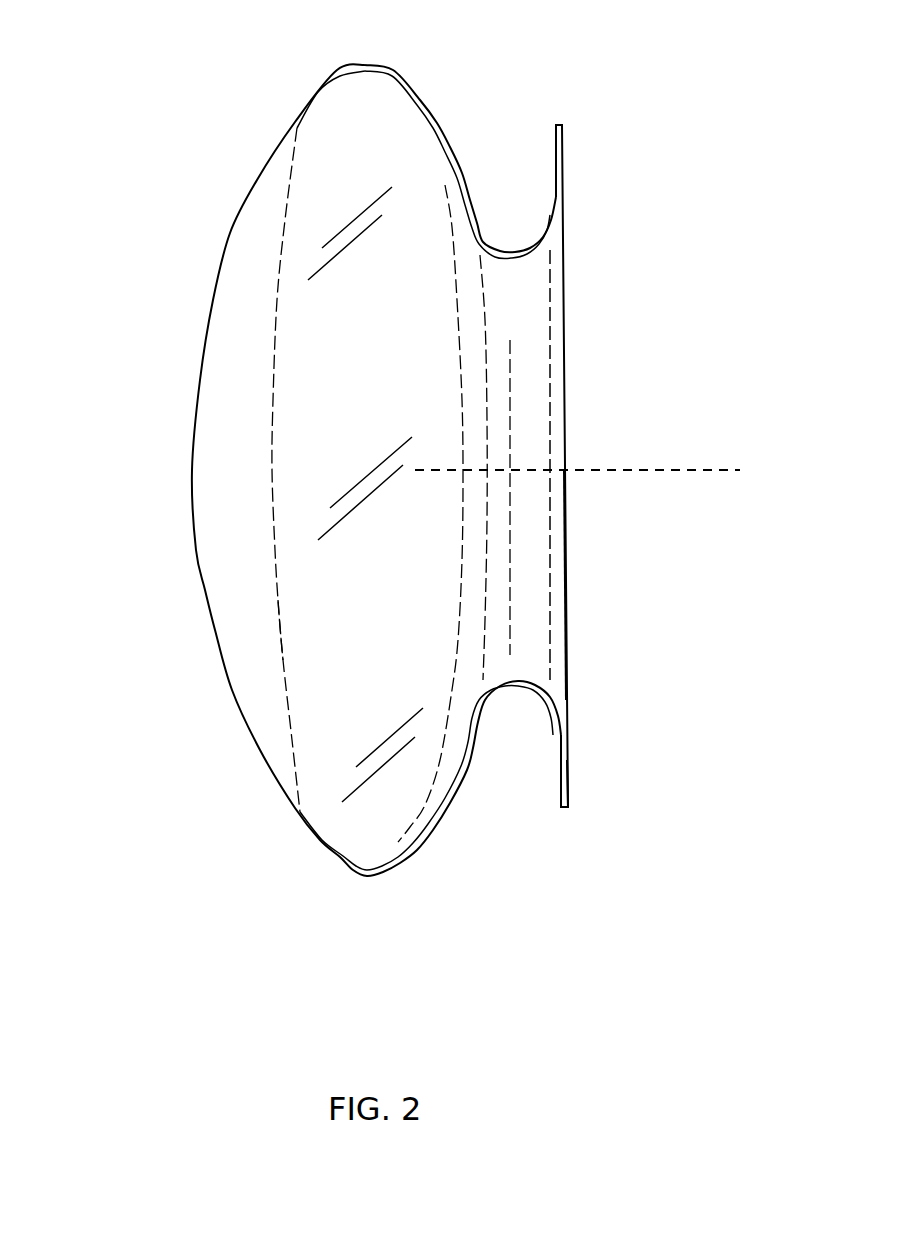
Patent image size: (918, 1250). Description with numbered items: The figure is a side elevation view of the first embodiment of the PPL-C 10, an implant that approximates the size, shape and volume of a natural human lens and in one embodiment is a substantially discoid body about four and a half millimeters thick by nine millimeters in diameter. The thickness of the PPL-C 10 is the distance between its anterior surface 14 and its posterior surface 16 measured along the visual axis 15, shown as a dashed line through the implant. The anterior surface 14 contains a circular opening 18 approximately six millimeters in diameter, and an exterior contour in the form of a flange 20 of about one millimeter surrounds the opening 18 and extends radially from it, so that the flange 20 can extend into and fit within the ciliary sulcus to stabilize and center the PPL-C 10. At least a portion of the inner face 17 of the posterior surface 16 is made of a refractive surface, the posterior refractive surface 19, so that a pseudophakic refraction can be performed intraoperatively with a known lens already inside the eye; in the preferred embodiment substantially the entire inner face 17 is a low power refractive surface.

The PPL-C 10 is at (198, 147).
The anterior surface 14 is at (565, 452).
The visual axis 15 is at (720, 471).
The posterior surface 16 is at (192, 475).
The inner face 17 is at (277, 583).
The circular opening 18 is at (567, 532).
The posterior refractive surface 19 is at (278, 623).
The flange 20 is at (568, 806).